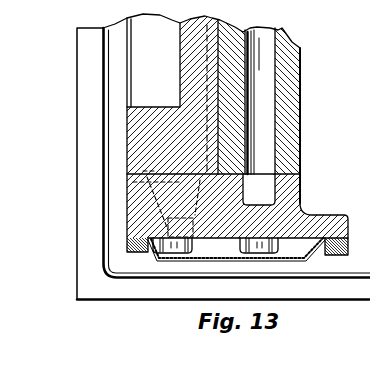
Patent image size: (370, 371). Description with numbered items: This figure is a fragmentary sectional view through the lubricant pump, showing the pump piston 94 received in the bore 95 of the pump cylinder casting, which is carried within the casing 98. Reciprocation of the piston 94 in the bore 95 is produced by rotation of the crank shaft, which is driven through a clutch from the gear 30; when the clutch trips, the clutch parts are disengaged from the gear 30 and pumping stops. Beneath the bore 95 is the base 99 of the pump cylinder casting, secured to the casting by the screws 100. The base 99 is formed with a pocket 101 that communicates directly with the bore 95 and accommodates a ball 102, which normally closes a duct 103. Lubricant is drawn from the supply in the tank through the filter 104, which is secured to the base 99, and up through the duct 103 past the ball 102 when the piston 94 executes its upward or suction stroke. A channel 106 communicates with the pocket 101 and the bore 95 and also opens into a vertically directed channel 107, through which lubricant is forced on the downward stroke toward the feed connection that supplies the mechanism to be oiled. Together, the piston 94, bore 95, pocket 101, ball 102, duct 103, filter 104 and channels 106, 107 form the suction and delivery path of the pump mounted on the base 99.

The gear 30 is at (223, 164).
The piston 94 is at (195, 19).
The bore 95 is at (147, 42).
The casing 98 is at (300, 98).
The base 99 is at (309, 214).
The screws 100 is at (312, 263).
The pocket 101 is at (123, 188).
The ball 102 is at (122, 211).
The duct 103 is at (122, 234).
The filter 104 is at (278, 247).
The channel 106 is at (244, 193).
The channel 107 is at (267, 62).